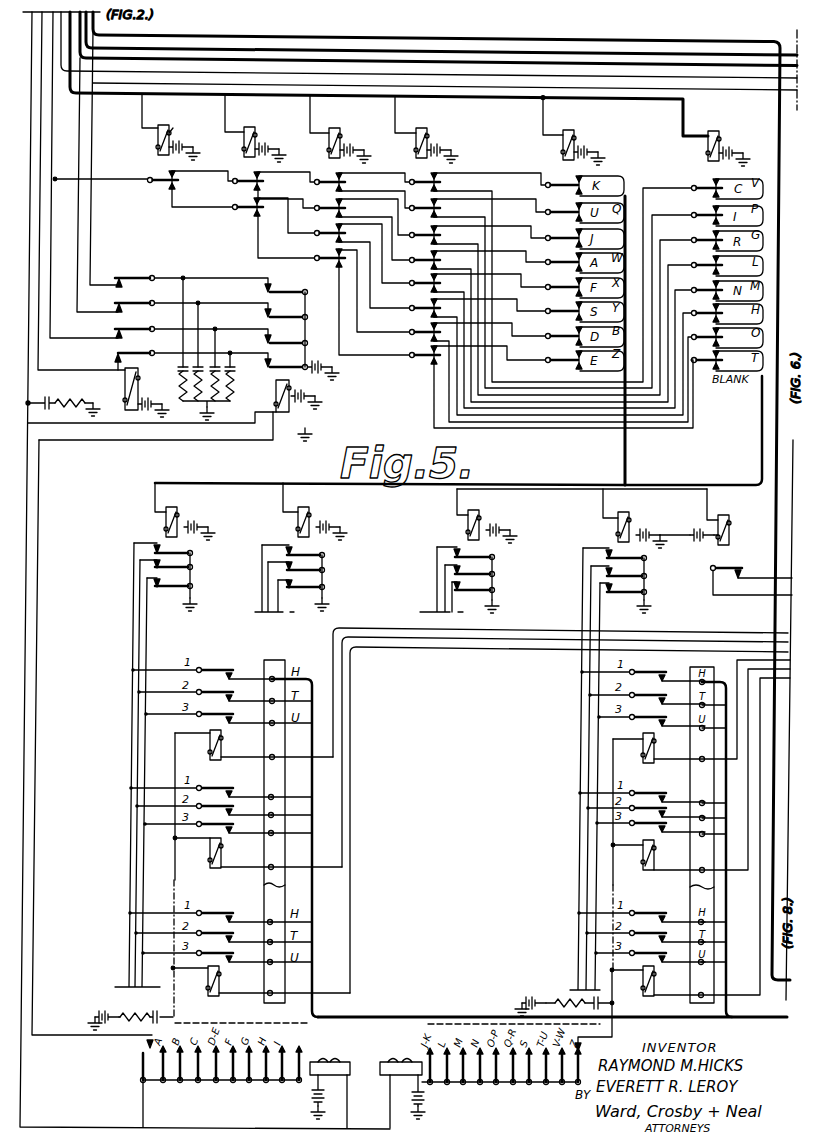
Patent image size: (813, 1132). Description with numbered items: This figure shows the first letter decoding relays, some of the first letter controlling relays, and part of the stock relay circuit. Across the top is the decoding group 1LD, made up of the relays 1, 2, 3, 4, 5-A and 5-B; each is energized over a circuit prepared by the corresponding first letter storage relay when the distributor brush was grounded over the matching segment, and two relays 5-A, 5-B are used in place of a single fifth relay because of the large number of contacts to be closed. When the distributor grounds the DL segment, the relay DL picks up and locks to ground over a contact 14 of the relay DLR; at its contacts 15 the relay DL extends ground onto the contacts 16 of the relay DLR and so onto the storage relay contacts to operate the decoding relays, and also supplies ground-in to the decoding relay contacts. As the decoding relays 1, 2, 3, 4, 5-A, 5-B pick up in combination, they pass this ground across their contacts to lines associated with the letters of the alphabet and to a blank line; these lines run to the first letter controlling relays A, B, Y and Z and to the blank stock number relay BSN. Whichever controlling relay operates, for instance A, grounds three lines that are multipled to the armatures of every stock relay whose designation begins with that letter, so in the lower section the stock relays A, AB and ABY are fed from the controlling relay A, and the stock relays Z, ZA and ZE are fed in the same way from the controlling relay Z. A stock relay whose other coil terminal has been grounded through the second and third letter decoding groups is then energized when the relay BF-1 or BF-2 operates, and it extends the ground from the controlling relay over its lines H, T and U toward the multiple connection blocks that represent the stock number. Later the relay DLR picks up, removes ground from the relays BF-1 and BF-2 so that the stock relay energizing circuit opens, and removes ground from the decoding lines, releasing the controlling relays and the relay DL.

The first letter decoding relays 1LD is at (158, 127).
The first letter decoding relay 1 is at (174, 132).
The first letter decoding relay 2 is at (255, 129).
The first letter decoding relay 3 is at (340, 129).
The first letter decoding relay 4 is at (426, 129).
The first letter decoding relay 5-A is at (573, 130).
The first letter decoding relay 5-B is at (728, 146).
The contact of relay DLR 14 is at (304, 336).
The contacts of relay DL 15 is at (193, 302).
The contacts of relay DLR 16 is at (289, 310).
The relay DL is at (146, 392).
The relay DLR is at (284, 410).
The first letter controlling relay / stock relay A is at (224, 735).
The first letter controlling relay B is at (301, 547).
The first letter controlling relay Y is at (468, 551).
The first letter controlling relay / stock relay Z is at (644, 739).
The blank stock number relay BSN is at (749, 542).
The stock relay AB is at (275, 853).
The stock relay ABY is at (260, 981).
The stock relay ZA is at (659, 855).
The stock relay ZE is at (644, 981).
The relay BF-1 is at (330, 1085).
The relay BF-2 is at (401, 1085).